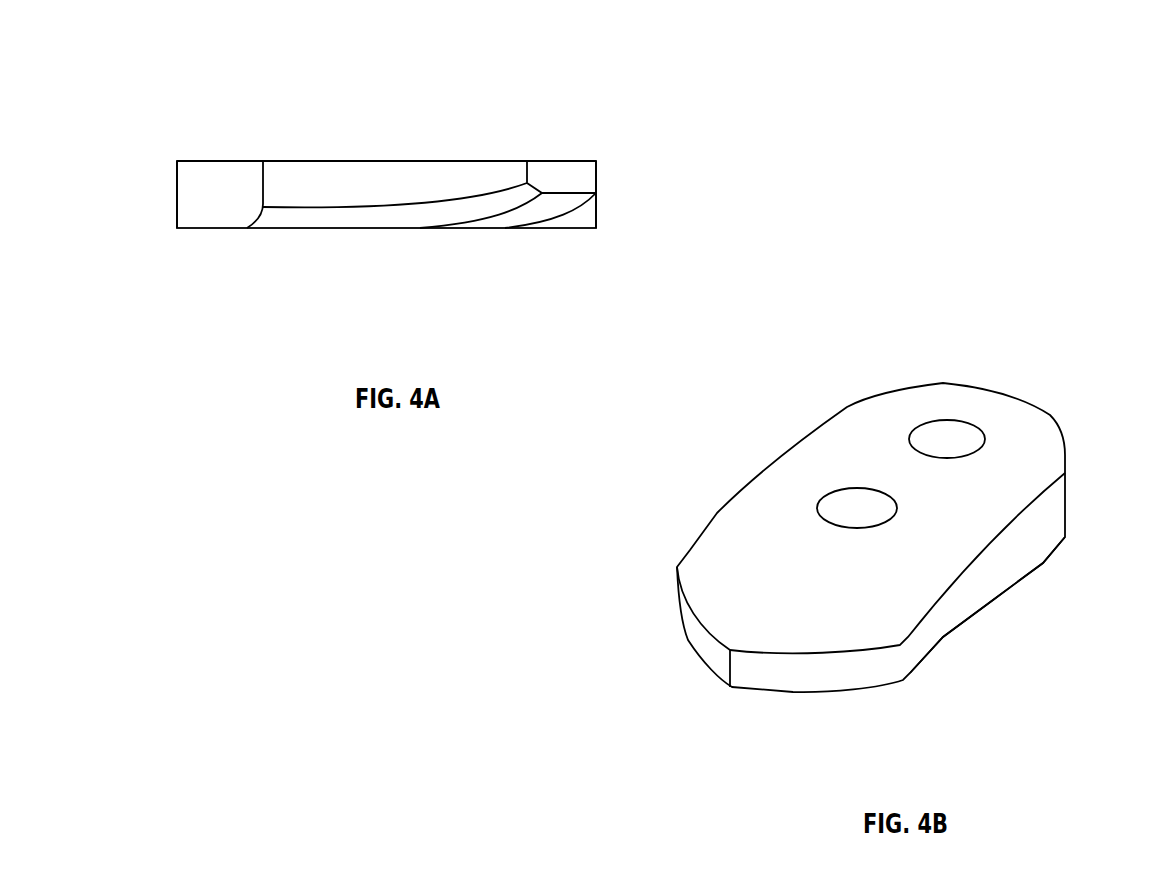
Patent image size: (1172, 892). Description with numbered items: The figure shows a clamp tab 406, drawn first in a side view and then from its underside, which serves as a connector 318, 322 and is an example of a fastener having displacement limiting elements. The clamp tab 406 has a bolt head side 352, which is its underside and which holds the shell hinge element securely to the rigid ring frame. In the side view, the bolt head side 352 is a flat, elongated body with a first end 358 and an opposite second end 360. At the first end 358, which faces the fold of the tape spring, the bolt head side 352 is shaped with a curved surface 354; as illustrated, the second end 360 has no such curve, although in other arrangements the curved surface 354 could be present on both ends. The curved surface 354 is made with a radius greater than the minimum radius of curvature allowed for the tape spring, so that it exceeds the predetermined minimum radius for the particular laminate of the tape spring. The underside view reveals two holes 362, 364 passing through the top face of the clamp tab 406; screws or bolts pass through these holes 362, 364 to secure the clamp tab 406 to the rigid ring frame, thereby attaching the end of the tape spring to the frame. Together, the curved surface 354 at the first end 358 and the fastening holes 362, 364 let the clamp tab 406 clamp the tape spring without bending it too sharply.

In FIG. 4A, the connector 318 is at (383, 196).
In FIG. 4B, the connector 318 is at (862, 535).
In FIG. 4A, the connector 322 is at (362, 92).
In FIG. 4B, the connector 322 is at (862, 535).
In FIG. 4A, the bolt head side 352 is at (357, 229).
In FIG. 4B, the bolt head side 352 is at (770, 507).
In FIG. 4A, the curved surface 354 is at (517, 207).
In FIG. 4B, the curved surface 354 is at (878, 617).
In FIG. 4A, the first end 358 is at (597, 180).
In FIG. 4B, the first end 358 is at (727, 657).
In FIG. 4A, the second end 360 is at (177, 183).
In FIG. 4B, the hole 362 is at (947, 438).
In FIG. 4B, the hole 364 is at (845, 507).
In FIG. 4A, the clamp tab 406 is at (334, 152).
In FIG. 4B, the clamp tab 406 is at (1020, 656).